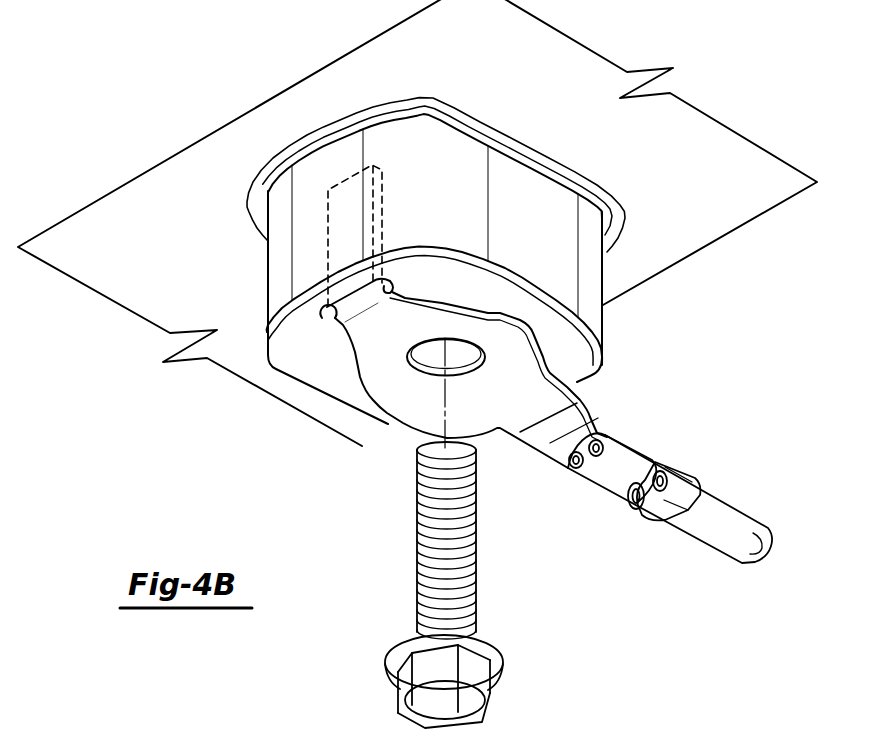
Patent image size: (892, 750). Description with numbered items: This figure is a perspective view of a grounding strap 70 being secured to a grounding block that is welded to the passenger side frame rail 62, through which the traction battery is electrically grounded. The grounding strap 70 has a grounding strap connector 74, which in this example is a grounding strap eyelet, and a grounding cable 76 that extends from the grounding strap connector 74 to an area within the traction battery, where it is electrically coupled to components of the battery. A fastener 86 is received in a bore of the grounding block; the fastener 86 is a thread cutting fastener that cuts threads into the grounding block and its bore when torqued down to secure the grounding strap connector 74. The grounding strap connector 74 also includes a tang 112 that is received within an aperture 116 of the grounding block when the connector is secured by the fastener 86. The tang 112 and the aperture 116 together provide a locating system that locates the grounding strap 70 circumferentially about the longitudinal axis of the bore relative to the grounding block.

The frame rail 62 is at (407, 45).
The tang 112 is at (328, 238).
The aperture 116 is at (320, 318).
The grounding strap connector 74 is at (392, 383).
The fastener 86 is at (487, 672).
The grounding strap 70 is at (712, 493).
The grounding cable 76 is at (728, 530).